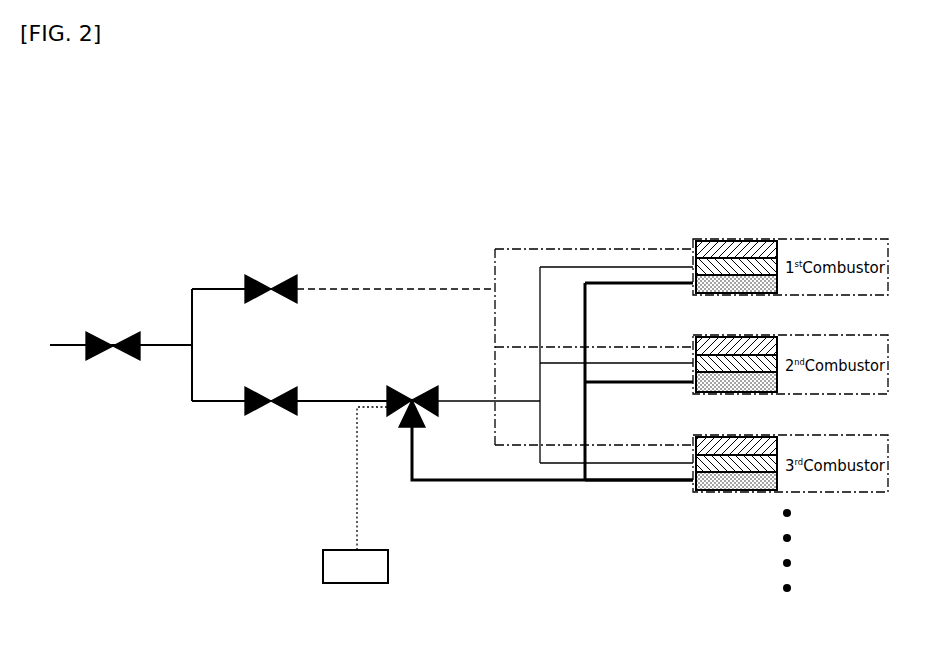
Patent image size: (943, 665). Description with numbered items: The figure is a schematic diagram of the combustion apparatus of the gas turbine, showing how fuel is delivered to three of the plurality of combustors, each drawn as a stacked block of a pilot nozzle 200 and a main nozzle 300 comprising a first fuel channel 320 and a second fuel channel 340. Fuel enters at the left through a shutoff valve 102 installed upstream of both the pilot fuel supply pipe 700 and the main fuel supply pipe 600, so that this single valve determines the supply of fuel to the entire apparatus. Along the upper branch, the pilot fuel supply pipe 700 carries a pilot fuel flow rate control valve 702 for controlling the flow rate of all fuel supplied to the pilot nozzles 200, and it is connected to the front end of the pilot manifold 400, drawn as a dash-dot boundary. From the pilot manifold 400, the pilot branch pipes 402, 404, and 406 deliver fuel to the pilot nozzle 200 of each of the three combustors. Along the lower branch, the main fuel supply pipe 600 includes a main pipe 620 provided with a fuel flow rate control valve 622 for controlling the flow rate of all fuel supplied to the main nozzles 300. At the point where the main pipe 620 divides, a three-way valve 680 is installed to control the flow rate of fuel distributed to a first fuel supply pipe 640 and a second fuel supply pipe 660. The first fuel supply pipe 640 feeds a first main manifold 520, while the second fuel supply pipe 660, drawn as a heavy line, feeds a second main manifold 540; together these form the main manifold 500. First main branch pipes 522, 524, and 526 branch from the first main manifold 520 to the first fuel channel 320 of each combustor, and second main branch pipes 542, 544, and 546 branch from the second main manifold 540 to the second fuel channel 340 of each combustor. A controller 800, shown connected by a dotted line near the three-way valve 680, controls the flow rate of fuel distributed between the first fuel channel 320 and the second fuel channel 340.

The shutoff valve 102 is at (113, 345).
The pilot nozzle 200 is at (718, 241).
The main nozzle 300 is at (757, 313).
The first fuel channel 320 is at (745, 241).
The second fuel channel 340 is at (770, 241).
The pilot manifold 400 is at (566, 358).
The pilot branch pipe 402 is at (535, 249).
The pilot branch pipe 404 is at (520, 346).
The pilot branch pipe 406 is at (498, 447).
The main manifold 500 is at (598, 417).
The first main manifold 520 is at (598, 402).
The first main branch pipe 522 is at (620, 266).
The first main branch pipe 524 is at (607, 364).
The first main branch pipe 526 is at (612, 464).
The second main manifold 540 is at (626, 451).
The second main branch pipe 542 is at (638, 285).
The second main branch pipe 544 is at (638, 384).
The second main branch pipe 546 is at (660, 482).
The main fuel supply pipe 600 is at (184, 410).
The main pipe 620 is at (338, 402).
The fuel flow rate control valve 622 is at (271, 403).
The first fuel supply pipe 640 is at (468, 403).
The second fuel supply pipe 660 is at (550, 482).
The three-way valve 680 is at (430, 422).
The pilot fuel supply pipe 700 is at (395, 289).
The pilot fuel flow rate control valve 702 is at (271, 289).
The controller 800 is at (355, 584).